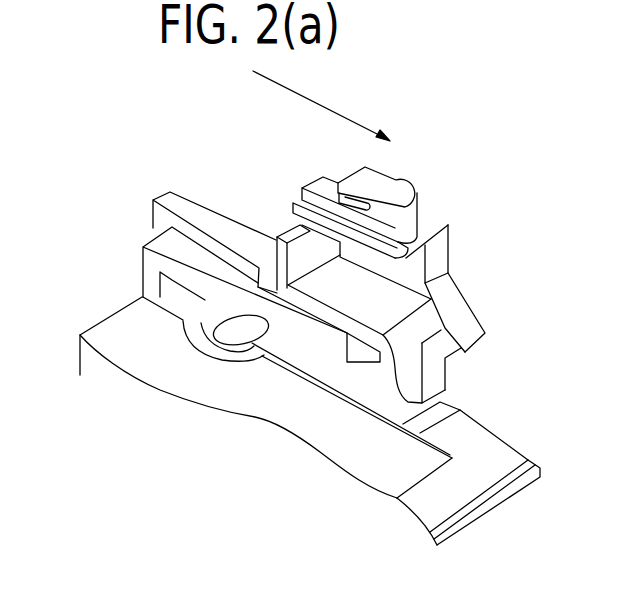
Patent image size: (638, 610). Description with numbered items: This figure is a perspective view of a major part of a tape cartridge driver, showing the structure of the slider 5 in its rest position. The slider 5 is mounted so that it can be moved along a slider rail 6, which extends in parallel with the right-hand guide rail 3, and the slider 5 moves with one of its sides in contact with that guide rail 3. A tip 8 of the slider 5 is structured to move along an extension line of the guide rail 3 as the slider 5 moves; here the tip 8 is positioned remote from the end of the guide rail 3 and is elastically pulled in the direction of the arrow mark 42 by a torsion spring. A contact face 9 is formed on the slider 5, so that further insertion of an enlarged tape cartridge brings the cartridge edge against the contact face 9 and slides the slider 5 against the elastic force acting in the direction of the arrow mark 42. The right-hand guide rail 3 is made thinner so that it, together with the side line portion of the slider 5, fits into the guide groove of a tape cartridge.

The arrow mark 42 is at (311, 103).
The slider rail 6 is at (182, 205).
The guide rail 3 is at (200, 283).
The slider 5 is at (302, 302).
The contact face 9 is at (300, 252).
The tip 8 is at (427, 382).